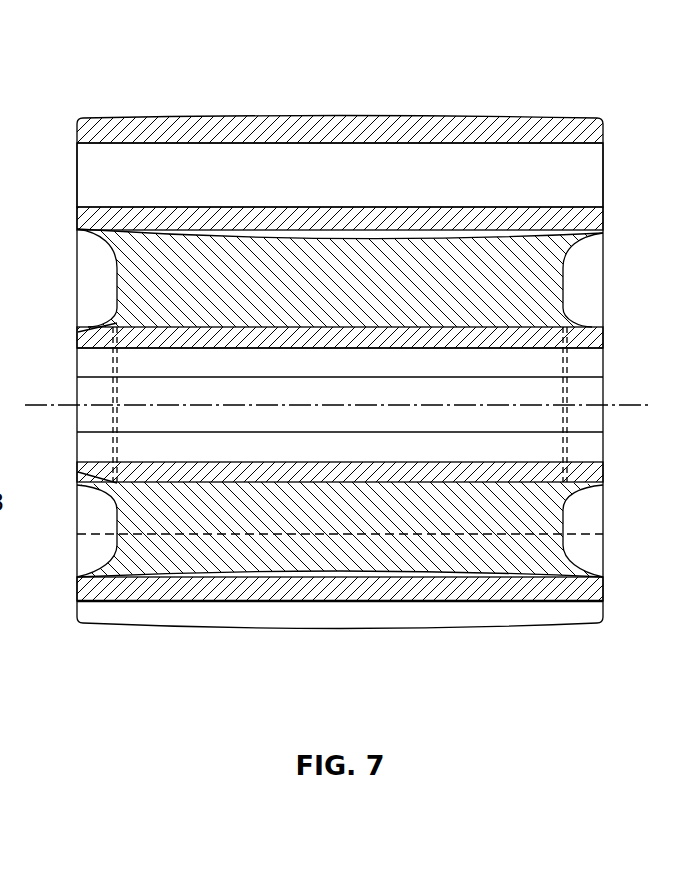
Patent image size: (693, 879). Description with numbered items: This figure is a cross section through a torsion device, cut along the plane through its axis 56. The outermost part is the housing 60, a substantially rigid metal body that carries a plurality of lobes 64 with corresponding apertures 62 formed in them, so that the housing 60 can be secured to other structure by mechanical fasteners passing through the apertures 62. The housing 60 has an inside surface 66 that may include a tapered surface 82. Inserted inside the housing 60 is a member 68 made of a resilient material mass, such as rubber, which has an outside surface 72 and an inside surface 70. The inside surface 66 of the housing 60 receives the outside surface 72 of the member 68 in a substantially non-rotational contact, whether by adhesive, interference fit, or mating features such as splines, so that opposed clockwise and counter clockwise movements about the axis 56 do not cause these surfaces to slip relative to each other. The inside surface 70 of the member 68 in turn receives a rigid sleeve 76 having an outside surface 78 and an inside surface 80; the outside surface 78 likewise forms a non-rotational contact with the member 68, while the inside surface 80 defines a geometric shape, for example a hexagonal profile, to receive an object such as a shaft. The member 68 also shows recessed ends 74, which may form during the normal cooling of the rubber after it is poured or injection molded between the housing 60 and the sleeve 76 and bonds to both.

The axis 56 is at (640, 404).
The housing 60 is at (478, 117).
The apertures 62 is at (593, 162).
The lobes 64 is at (115, 623).
The inside surface 66 is at (161, 238).
The member 68 is at (487, 265).
The inside surface 70 is at (183, 328).
The outside surface 72 is at (243, 237).
The recessed ends 74 is at (563, 283).
The sleeve 76 is at (592, 350).
The outside surface 78 is at (332, 483).
The inside surface 80 is at (105, 462).
The tapered surface 82 is at (103, 323).